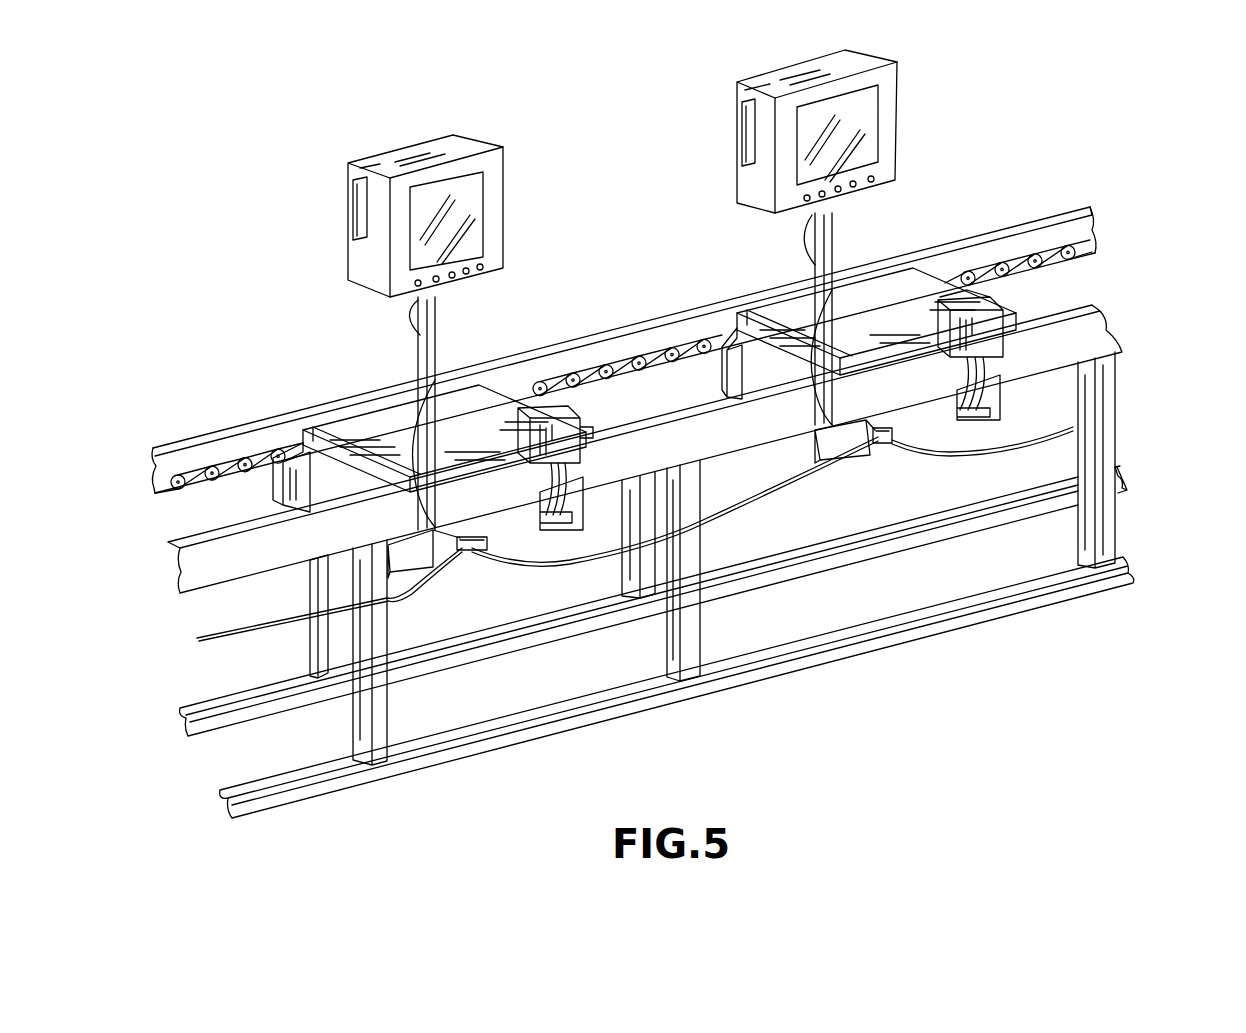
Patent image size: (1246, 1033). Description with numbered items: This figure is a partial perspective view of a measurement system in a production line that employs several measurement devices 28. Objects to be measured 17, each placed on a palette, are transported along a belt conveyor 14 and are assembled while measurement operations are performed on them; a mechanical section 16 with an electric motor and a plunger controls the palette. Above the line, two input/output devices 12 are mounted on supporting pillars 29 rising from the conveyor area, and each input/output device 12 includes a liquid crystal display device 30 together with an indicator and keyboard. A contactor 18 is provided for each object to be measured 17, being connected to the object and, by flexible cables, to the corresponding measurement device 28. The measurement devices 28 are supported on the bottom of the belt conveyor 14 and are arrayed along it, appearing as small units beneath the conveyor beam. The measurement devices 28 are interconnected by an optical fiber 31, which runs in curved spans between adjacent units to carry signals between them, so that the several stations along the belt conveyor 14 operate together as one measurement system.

The input/output device 12 is at (457, 216).
The belt conveyor 14 is at (196, 452).
The mechanical section 16 is at (467, 395).
The object to be measured 17 is at (444, 431).
The contactor 18 is at (580, 428).
The measurement device 28 is at (478, 551).
The supporting pillar 29 is at (418, 345).
The liquid crystal display device 30 is at (475, 240).
The optical fiber 31 is at (270, 632).